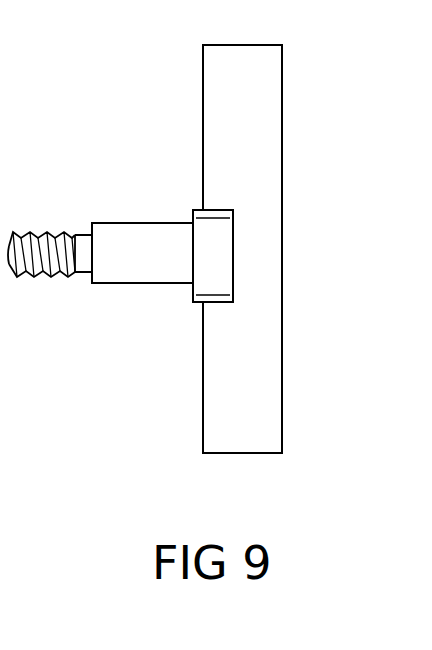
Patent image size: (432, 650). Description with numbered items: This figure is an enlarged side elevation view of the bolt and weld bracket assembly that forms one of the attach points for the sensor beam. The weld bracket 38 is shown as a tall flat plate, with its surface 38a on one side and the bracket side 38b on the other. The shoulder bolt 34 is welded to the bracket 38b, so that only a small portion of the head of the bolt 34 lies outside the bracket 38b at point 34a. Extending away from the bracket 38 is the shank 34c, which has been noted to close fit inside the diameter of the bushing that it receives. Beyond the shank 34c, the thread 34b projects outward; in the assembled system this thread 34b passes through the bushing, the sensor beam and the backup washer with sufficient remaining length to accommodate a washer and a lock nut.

The shoulder bolt 34 is at (120, 261).
The head portion outside bracket 34a is at (192, 302).
The thread 34b is at (19, 232).
The shank 34c is at (125, 281).
The weld bracket 38 is at (286, 105).
The weld bracket surface 38a is at (283, 232).
The bracket side 38b is at (236, 130).